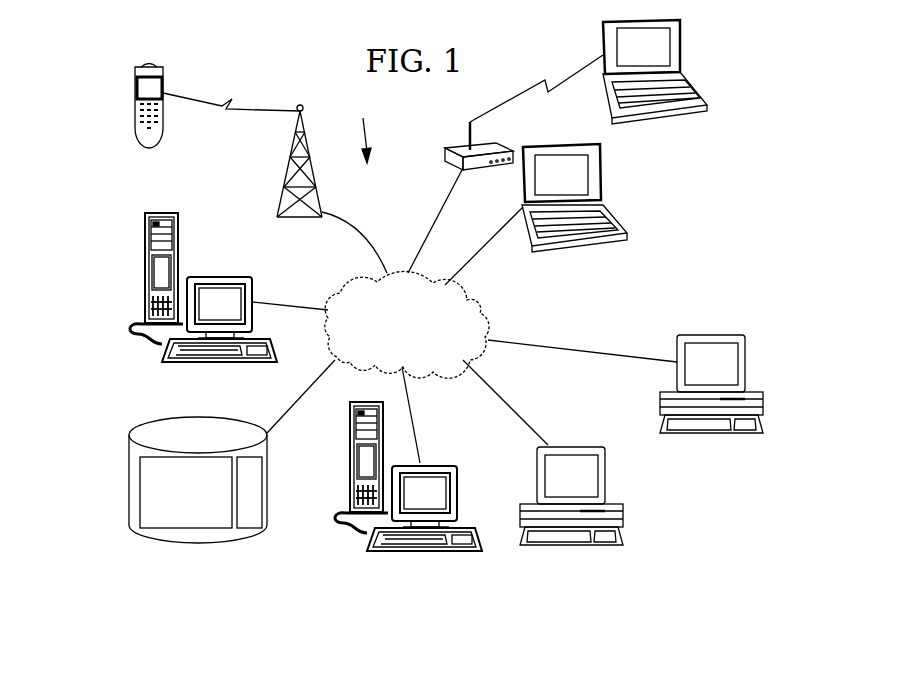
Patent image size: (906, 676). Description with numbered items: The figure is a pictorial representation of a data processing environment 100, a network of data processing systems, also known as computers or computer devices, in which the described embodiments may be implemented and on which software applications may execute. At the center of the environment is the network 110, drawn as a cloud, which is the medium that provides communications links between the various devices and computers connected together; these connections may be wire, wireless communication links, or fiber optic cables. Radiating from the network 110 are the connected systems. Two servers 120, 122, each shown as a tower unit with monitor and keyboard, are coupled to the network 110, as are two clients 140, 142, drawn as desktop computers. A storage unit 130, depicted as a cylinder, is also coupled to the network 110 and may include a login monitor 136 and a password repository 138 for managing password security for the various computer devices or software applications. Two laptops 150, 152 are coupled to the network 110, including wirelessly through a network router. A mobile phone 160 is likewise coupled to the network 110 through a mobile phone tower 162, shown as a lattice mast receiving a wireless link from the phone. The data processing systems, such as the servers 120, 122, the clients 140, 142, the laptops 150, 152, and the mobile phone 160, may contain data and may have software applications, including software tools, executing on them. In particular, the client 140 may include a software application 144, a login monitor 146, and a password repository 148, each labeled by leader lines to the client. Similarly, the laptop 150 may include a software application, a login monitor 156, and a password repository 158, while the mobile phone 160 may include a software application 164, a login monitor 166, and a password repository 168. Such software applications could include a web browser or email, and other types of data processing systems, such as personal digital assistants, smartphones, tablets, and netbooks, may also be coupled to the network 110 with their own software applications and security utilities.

The data processing environment 100 is at (343, 114).
The network 110 is at (388, 344).
The server 120 is at (196, 407).
The server 122 is at (404, 597).
The storage unit 130 is at (258, 451).
The login monitor 136 is at (207, 527).
The password repository 138 is at (255, 503).
The client 140 is at (530, 594).
The client 142 is at (686, 481).
The software application 144 is at (622, 511).
The login monitor 146 is at (623, 513).
The password repository 148 is at (620, 540).
The laptop 150 is at (535, 294).
The laptop 152 is at (688, 166).
The login monitor 156 is at (623, 221).
The password repository 158 is at (625, 227).
The mobile phone 160 is at (127, 184).
The mobile phone tower 162 is at (322, 267).
The software application 164 is at (137, 82).
The login monitor 166 is at (160, 80).
The password repository 168 is at (163, 97).